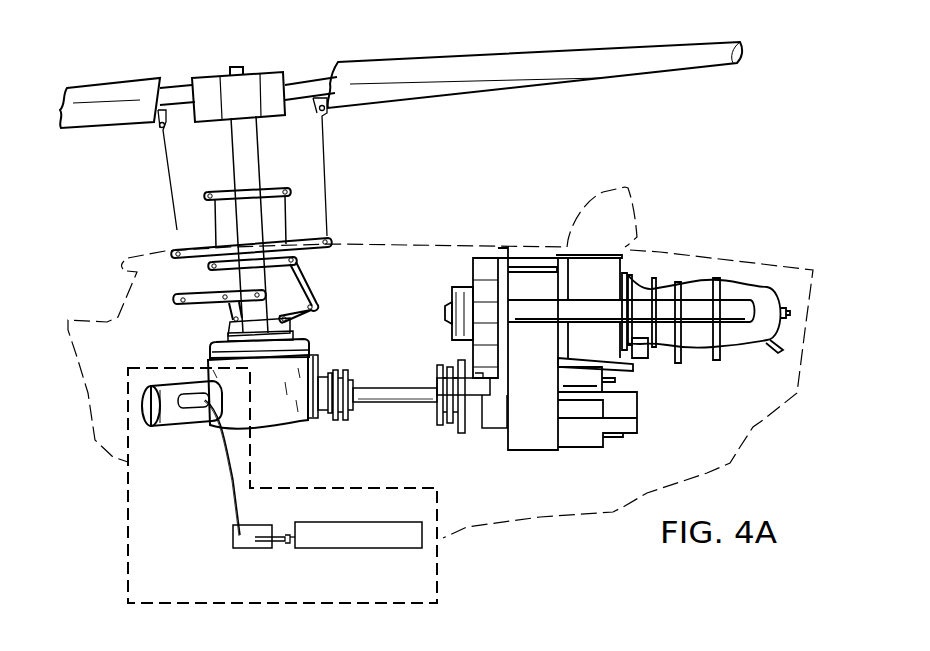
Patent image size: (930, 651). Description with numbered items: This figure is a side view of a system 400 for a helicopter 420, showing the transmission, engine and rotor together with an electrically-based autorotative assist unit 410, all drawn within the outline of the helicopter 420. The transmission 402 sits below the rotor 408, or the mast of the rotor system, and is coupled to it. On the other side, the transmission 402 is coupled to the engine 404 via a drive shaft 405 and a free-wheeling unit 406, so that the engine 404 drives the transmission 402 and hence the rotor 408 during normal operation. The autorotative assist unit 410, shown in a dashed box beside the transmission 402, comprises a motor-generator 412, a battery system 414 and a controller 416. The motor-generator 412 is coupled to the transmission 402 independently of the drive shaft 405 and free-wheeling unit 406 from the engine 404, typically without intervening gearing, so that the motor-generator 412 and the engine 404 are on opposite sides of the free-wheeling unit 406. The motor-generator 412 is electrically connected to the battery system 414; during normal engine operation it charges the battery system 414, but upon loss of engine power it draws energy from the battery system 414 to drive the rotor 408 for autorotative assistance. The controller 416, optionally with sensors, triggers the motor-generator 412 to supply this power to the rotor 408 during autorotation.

The system 400 is at (519, 170).
The transmission 402 is at (303, 428).
The engine 404 is at (655, 398).
The drive shaft 405 is at (397, 387).
The free-wheeling unit 406 is at (495, 432).
The rotor 408 is at (250, 150).
The autorotative assist unit 410 is at (200, 551).
The motor-generator 412 is at (184, 430).
The battery system 414 is at (360, 550).
The controller 416 is at (248, 550).
The helicopter 420 is at (167, 252).